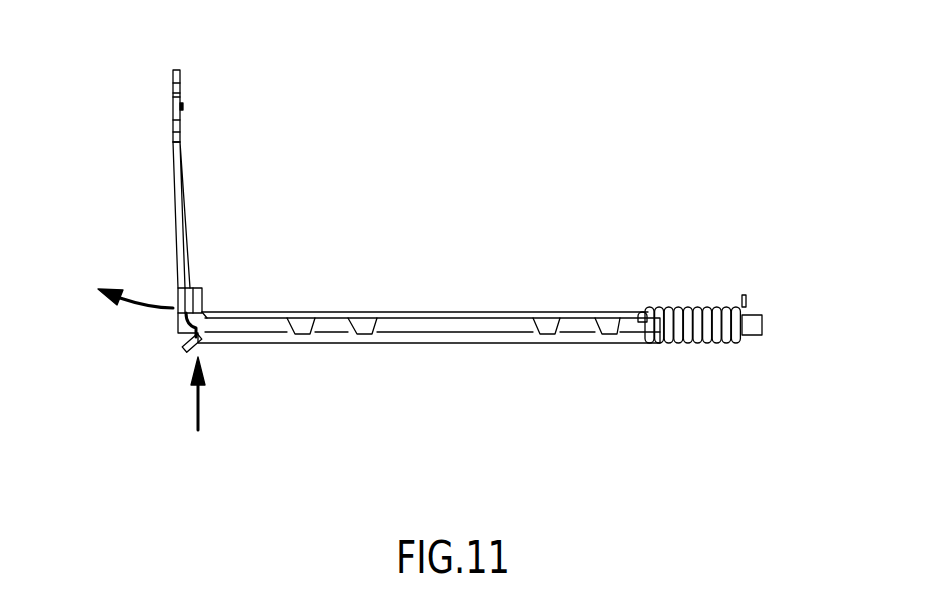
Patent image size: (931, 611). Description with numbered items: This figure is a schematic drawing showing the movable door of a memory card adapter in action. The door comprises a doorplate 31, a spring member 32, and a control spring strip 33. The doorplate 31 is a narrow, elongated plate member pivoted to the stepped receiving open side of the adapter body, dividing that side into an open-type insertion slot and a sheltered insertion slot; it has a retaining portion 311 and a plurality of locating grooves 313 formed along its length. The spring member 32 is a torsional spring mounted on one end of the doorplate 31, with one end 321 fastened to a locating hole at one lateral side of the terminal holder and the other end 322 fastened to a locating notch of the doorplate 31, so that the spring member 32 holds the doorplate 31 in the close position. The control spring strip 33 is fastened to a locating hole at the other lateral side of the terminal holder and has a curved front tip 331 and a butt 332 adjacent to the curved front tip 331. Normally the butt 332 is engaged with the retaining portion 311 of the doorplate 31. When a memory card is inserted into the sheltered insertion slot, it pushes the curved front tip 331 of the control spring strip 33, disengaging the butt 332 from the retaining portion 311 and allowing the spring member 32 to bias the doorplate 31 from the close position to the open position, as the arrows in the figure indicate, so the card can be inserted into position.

The doorplate 31 is at (440, 335).
The retaining portion 311 is at (200, 320).
The locating grooves 313 is at (305, 327).
The spring member 32 is at (673, 345).
The one end of spring member 321 is at (746, 295).
The other end of spring member 322 is at (642, 313).
The control spring strip 33 is at (175, 178).
The curved front tip 331 is at (186, 344).
The butt 332 is at (202, 288).